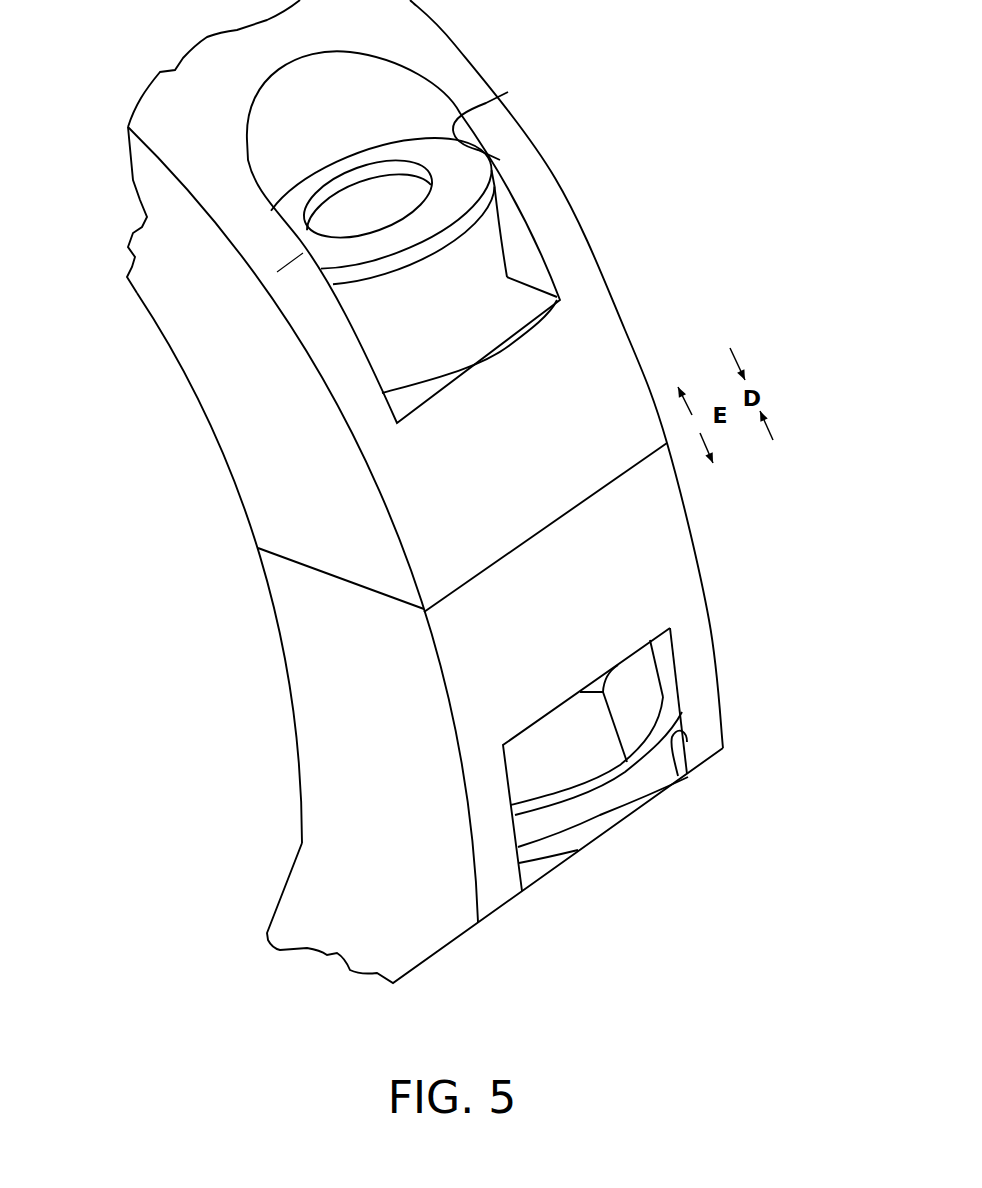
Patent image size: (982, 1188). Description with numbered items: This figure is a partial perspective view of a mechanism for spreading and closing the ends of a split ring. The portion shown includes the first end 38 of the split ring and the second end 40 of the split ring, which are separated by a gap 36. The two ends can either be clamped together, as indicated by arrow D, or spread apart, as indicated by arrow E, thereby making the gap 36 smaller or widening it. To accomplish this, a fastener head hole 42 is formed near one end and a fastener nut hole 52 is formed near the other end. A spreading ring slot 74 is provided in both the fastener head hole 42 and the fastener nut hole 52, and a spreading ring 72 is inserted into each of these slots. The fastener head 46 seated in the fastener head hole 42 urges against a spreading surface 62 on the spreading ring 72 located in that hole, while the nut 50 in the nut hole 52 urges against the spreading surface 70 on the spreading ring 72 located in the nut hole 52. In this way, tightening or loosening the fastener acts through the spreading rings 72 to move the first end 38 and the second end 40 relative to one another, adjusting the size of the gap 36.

The gap 36 is at (338, 585).
The first end 38 is at (673, 530).
The second end 40 is at (614, 350).
The fastener head hole 42 is at (513, 243).
The fastener head 46 is at (467, 303).
The nut 50 is at (638, 677).
The fastener nut hole 52 is at (686, 676).
The spreading surface 62 is at (353, 285).
The spreading surface 70 is at (533, 835).
The spreading ring 72 is at (478, 173).
The spreading ring slot 74 is at (477, 127).